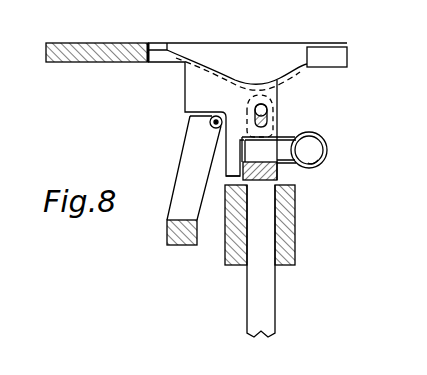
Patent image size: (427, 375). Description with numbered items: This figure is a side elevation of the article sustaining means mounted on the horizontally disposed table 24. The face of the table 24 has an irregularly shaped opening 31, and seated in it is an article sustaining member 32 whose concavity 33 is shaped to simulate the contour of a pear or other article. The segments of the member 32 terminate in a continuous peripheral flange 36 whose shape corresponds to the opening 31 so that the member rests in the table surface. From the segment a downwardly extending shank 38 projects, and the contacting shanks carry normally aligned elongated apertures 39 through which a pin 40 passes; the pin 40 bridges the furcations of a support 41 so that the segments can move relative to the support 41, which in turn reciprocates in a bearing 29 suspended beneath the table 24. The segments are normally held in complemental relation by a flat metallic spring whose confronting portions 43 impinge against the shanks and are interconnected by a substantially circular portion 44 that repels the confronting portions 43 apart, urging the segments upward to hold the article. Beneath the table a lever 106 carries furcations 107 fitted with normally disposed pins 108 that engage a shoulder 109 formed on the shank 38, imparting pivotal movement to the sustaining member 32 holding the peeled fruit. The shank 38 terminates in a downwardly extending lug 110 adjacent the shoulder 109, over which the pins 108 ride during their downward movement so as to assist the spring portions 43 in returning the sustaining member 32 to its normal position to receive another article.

The table 24 is at (98, 42).
The opening 31 is at (158, 47).
The article sustaining member 32 is at (323, 42).
The concavity 33 is at (215, 70).
The peripheral flange 36 is at (343, 48).
The shank 38 is at (205, 98).
The elongated aperture 39 is at (267, 110).
The pin 40 is at (268, 120).
The confronting portion 43 is at (292, 163).
The circular portion 44 is at (327, 155).
The furcation 107 is at (185, 190).
The shoulder 109 is at (185, 112).
The pin 108 is at (212, 123).
The lug 110 is at (228, 162).
The lever 106 is at (175, 238).
The bearing 29 is at (295, 213).
The support 41 is at (272, 288).